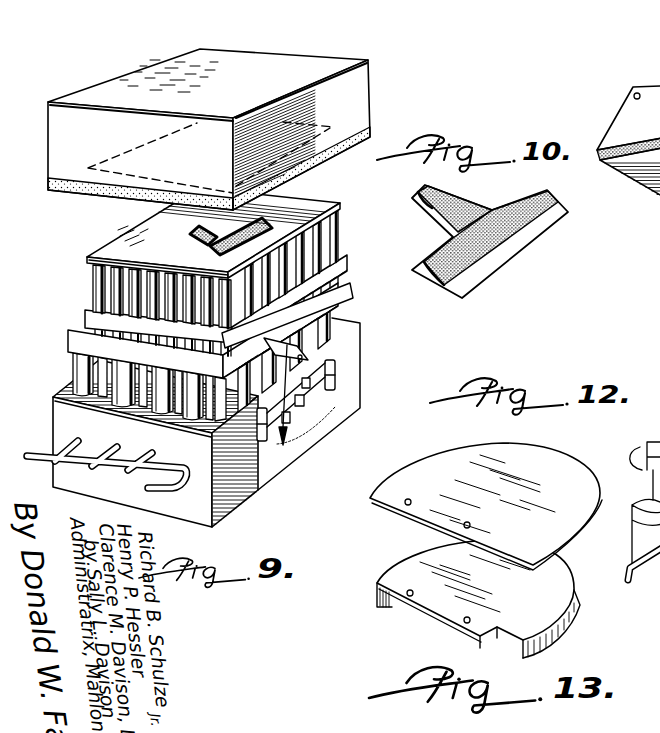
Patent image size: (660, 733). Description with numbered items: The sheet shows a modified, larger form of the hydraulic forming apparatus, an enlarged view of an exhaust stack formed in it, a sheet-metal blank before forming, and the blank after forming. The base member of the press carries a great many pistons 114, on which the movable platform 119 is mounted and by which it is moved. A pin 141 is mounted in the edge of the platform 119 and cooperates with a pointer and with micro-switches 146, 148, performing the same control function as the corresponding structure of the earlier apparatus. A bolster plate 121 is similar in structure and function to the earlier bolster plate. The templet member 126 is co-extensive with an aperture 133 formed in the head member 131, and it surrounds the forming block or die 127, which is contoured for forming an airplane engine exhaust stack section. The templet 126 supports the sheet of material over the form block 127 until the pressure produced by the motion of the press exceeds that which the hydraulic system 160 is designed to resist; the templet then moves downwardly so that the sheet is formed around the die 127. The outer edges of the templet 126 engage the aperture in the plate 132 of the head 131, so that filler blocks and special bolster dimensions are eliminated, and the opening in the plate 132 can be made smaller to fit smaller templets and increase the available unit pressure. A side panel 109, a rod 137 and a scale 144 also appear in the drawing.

In FIG. 9, the head member 131 is at (362, 73).
In FIG. 9, the aperture 133 is at (300, 118).
In FIG. 9, the plate 132 is at (368, 136).
In FIG. 9, the templet member 126 is at (333, 206).
In FIG. 9, the forming block or die 127 is at (152, 223).
In FIG. 9, the pistons 114 is at (335, 296).
In FIG. 12, the pistons 114 is at (624, 496).
In FIG. 9, the pin 141 is at (306, 349).
In FIG. 9, the bolster plate 121 is at (93, 316).
In FIG. 9, the movable platform 119 is at (74, 346).
In FIG. 9, the micro-switch 148 is at (336, 362).
In FIG. 9, the side panel 109 is at (349, 371).
In FIG. 9, the rod 137 is at (318, 402).
In FIG. 9, the micro-switch 146 is at (288, 420).
In FIG. 9, the scale 144 is at (286, 432).
In FIG. 9, the hydraulic system 160 is at (93, 481).
In FIG. 12, the hydraulic system 160 is at (659, 591).